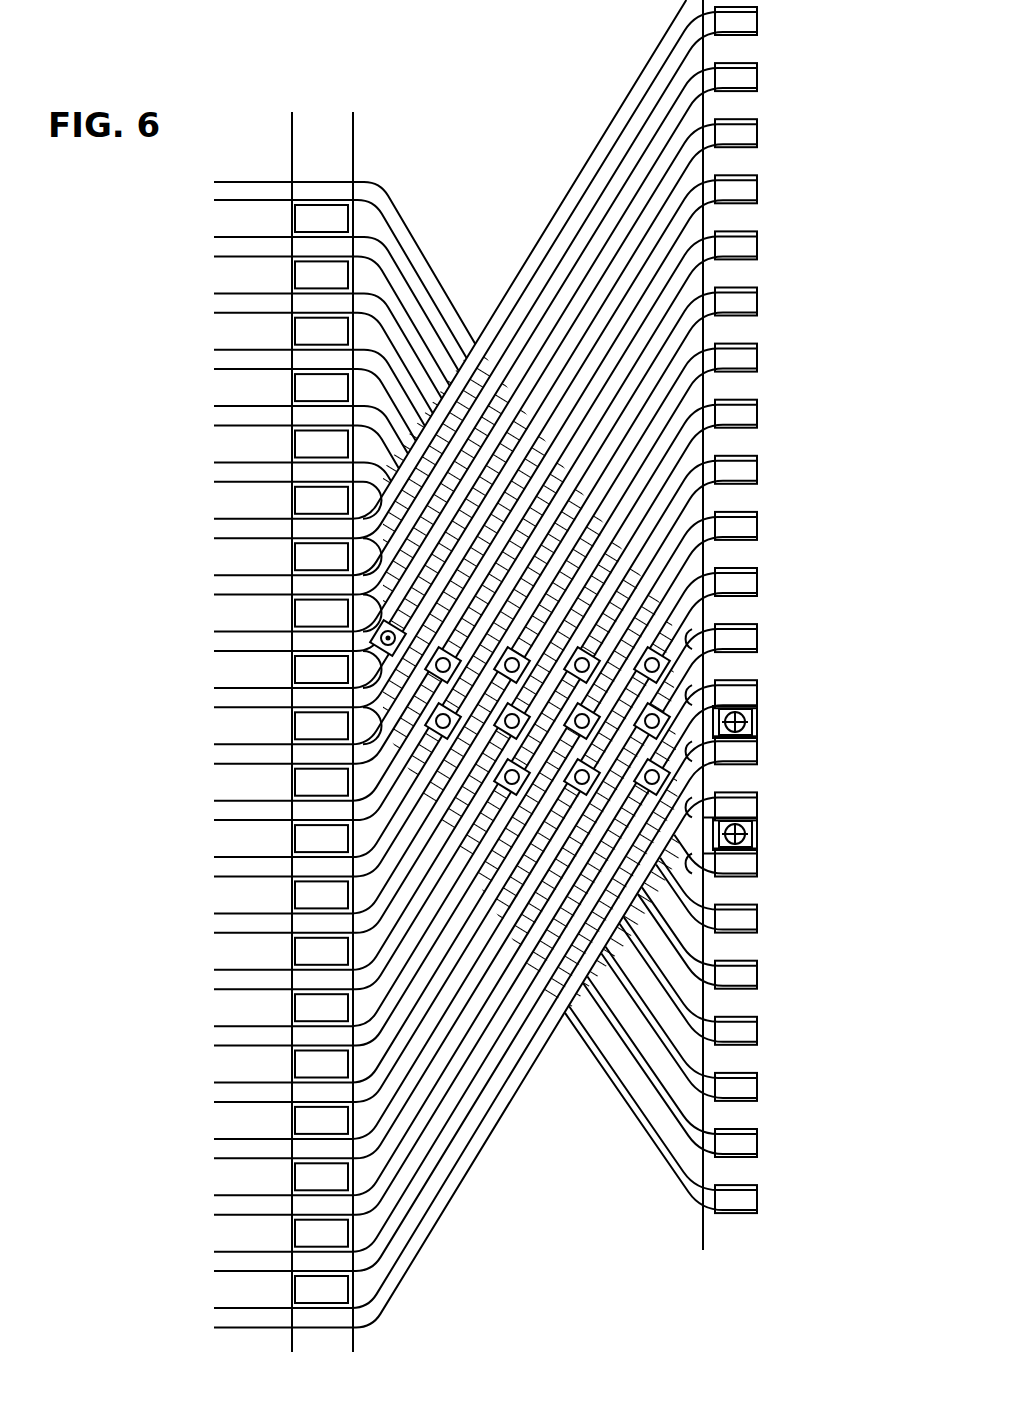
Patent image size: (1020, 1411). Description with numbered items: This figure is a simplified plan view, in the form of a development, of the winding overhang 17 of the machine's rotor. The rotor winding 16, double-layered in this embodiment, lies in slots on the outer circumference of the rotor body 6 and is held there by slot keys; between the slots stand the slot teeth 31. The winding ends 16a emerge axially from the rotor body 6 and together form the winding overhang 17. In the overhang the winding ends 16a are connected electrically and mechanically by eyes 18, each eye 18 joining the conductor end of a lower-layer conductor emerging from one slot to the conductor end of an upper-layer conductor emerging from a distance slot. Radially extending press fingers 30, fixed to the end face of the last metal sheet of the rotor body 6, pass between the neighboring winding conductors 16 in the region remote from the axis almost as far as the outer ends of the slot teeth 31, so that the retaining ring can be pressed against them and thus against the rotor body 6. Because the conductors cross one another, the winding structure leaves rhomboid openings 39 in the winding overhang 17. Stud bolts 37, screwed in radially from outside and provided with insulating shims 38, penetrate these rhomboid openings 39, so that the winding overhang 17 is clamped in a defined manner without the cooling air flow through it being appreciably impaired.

The rotor body 6 is at (247, 778).
The rotor winding 16 is at (505, 1220).
The winding ends 16a is at (690, 1027).
The winding overhang 17 is at (485, 176).
The eyes 18 is at (757, 735).
The press fingers 30 is at (312, 328).
The slot teeth 31 is at (247, 440).
The stud bolts 37 is at (850, 665).
The insulating shims 38 is at (625, 678).
The rhomboid openings 39 is at (598, 915).